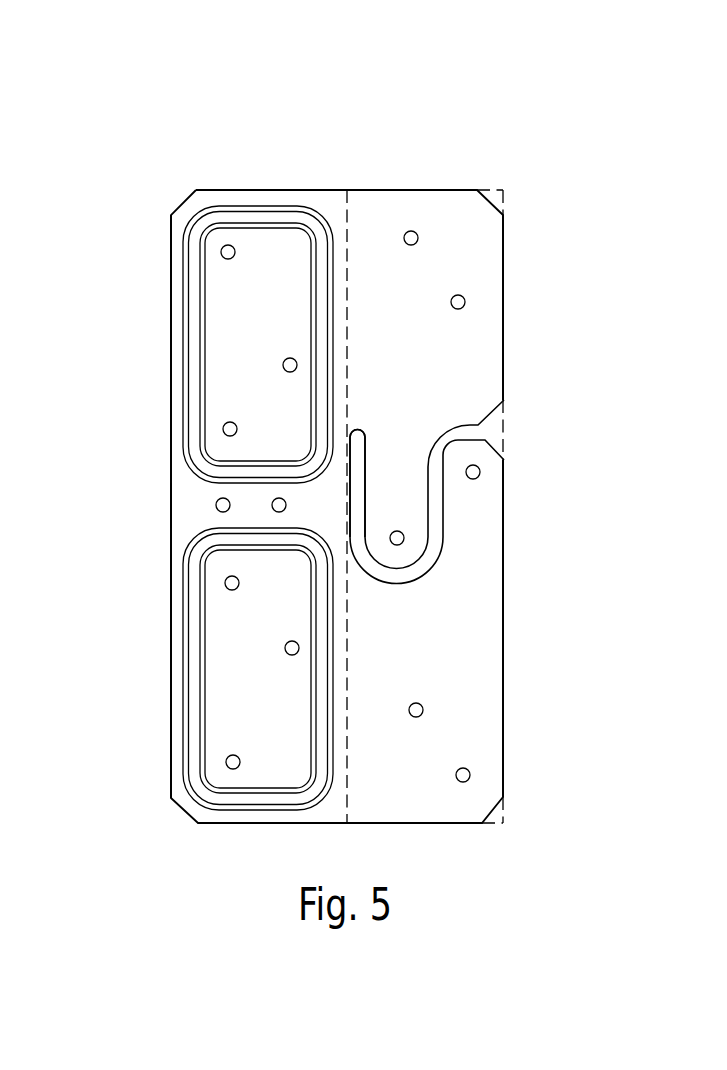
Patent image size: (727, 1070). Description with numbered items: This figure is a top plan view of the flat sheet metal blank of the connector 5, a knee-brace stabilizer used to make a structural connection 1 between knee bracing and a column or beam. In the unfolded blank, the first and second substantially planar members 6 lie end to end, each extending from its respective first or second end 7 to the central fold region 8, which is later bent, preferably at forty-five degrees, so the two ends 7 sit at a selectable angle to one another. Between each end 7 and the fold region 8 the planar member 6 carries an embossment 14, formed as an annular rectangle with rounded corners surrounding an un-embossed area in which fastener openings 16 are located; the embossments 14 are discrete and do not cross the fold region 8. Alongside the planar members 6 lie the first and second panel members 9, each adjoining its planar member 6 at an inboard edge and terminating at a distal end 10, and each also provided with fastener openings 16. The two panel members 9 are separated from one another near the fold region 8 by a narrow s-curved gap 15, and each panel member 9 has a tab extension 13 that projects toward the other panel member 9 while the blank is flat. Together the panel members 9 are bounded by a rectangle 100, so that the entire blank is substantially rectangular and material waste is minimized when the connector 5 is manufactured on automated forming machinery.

The structural connection 1 is at (217, 825).
The connector 5 is at (331, 186).
The substantially planar member 6 is at (168, 240).
The end 7 is at (218, 189).
The fold region 8 is at (184, 507).
The panel member 9 is at (426, 186).
The distal end 10 is at (503, 372).
The tab extension 13 is at (402, 500).
The embossment 14 is at (277, 221).
The s-curved gap 15 is at (358, 455).
The fastener openings 16 is at (218, 502).
The rectangle 100 is at (503, 188).